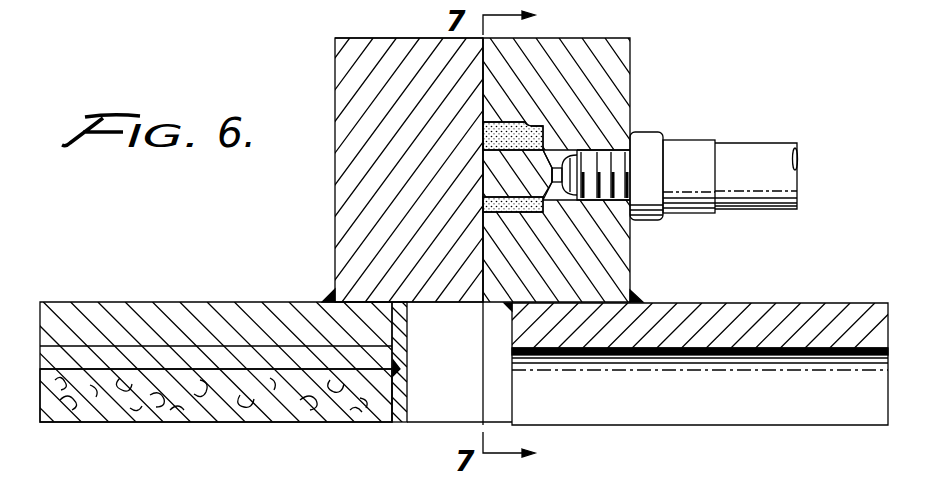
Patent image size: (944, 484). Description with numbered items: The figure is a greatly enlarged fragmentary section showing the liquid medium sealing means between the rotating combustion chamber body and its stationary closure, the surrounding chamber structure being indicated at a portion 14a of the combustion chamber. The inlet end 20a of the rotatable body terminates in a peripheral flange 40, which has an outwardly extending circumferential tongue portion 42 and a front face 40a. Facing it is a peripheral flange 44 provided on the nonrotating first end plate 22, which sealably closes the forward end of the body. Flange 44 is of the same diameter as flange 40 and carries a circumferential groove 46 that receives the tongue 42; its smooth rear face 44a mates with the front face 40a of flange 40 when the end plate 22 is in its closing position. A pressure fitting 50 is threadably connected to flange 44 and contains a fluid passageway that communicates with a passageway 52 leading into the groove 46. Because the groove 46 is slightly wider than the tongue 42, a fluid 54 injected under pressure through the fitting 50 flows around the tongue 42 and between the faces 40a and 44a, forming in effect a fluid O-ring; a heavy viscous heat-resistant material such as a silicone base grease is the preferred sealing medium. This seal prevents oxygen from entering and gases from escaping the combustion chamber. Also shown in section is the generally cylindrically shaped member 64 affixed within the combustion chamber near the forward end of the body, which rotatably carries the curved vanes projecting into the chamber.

The top face of manifold block 14a is at (318, 60).
The peripheral flange 40 is at (335, 218).
The front face of flange 40a is at (489, 265).
The peripheral flange 44 is at (612, 52).
The rear face of flange 44a is at (486, 68).
The circumferential groove 46 is at (538, 150).
The circumferential tongue portion 42 is at (548, 158).
The pressure fitting 50 is at (653, 163).
The passageway 52 is at (547, 187).
The fluid 54 is at (544, 212).
The inlet end of body portion 20a is at (75, 352).
The first end plate 22 is at (827, 312).
The cylindrically shaped member 64 is at (243, 413).